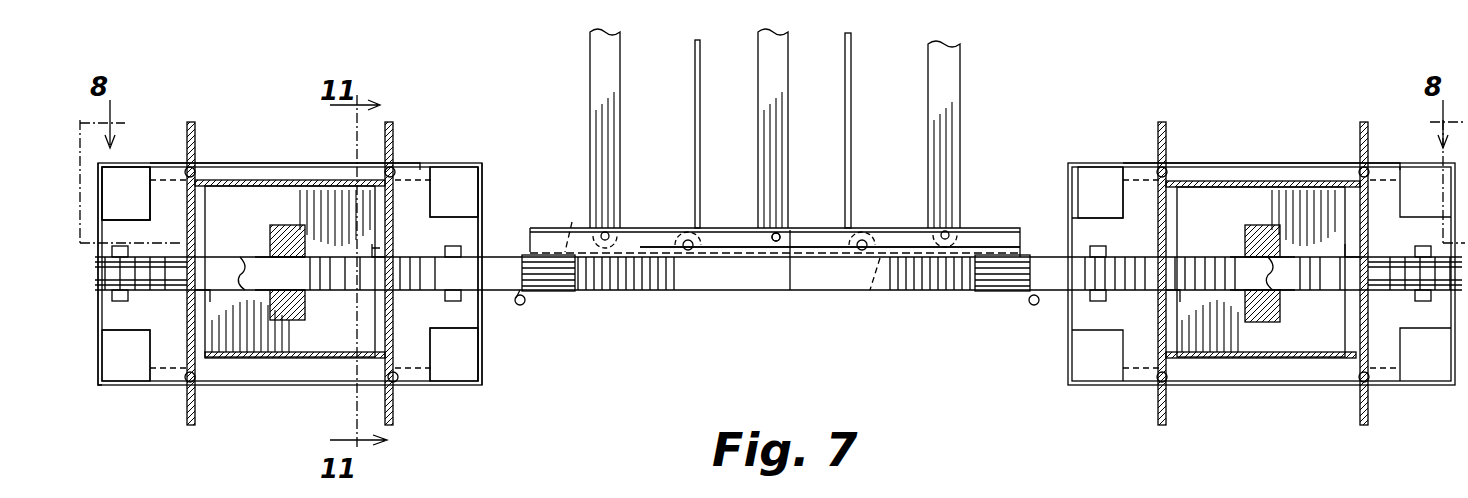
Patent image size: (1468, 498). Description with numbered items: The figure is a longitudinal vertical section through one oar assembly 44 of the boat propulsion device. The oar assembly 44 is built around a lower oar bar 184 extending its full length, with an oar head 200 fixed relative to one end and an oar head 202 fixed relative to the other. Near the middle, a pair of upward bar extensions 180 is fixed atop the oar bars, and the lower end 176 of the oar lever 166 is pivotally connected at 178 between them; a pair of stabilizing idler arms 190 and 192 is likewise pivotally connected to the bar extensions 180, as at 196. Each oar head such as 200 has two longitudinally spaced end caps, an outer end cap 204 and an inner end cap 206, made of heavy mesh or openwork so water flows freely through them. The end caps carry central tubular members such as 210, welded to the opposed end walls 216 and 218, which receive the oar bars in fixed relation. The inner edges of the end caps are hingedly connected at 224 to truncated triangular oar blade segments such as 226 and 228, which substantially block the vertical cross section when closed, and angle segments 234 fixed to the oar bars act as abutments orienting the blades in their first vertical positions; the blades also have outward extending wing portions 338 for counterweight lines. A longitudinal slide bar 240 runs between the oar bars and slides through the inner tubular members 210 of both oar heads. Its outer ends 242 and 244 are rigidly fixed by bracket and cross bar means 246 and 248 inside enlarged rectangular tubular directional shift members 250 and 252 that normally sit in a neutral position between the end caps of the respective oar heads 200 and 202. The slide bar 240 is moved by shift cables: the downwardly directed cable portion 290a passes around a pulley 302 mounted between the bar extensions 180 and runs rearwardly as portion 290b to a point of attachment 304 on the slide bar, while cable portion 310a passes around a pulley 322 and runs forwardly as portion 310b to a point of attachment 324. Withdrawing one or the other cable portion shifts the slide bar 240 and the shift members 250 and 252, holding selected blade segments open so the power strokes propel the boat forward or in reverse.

The oar assembly 44 is at (775, 301).
The lever 166 is at (752, 102).
The lower end 176 is at (782, 222).
The pivotal connection 178 is at (792, 270).
The upward bar extension 180 is at (730, 236).
The oar bar 184 is at (745, 280).
The stabilizing idler arm 190 is at (600, 100).
The stabilizing idler arm 192 is at (950, 105).
The pivotal connection 196 is at (608, 233).
The oar head assembly 200 is at (455, 135).
The oar head assembly 202 is at (1104, 130).
The outer end cap 204 is at (102, 394).
The inner end cap 206 is at (488, 392).
The central tubular member 210 is at (1130, 238).
The end wall 216 is at (100, 218).
The end wall 218 is at (482, 195).
The hinged connection 224 is at (186, 168).
The oar blade segment 226 is at (188, 214).
The oar blade segment 228 is at (188, 312).
The angle segment 234 is at (210, 255).
The slide bar 240 is at (322, 280).
The outer end 242 is at (272, 290).
The outer end 244 is at (1280, 282).
The bracket and cross bar means 246 is at (286, 224).
The bracket and cross bar means 248 is at (288, 322).
The directional shift member 250 is at (258, 180).
The directional shift member 252 is at (1225, 180).
The downwardly directed cable portion 290a is at (697, 128).
The rearwardly directed cable portion 290b is at (575, 218).
The pulley 302 is at (682, 240).
The point of attachment 304 is at (522, 305).
The downwardly directed cable portion 310a is at (852, 160).
The forwardly directed cable portion 310b is at (898, 280).
The pulley 322 is at (867, 240).
The point of attachment 324 is at (1032, 306).
The wing portion 338 is at (196, 128).